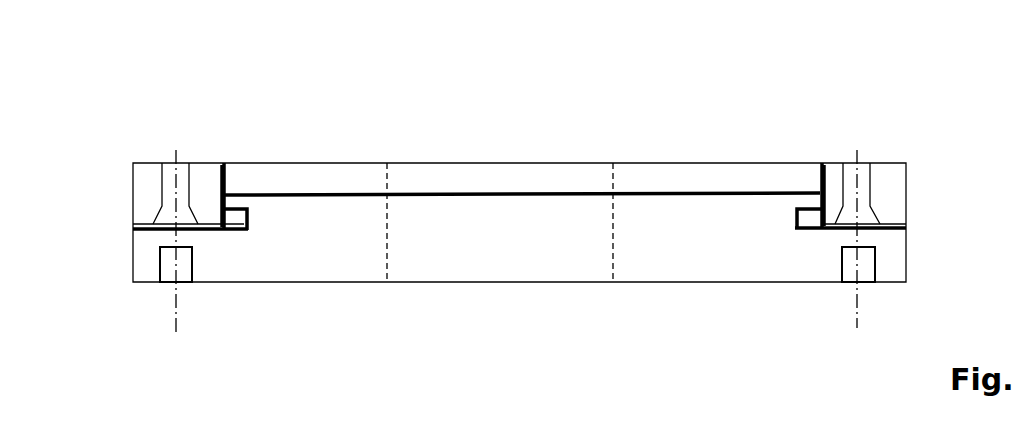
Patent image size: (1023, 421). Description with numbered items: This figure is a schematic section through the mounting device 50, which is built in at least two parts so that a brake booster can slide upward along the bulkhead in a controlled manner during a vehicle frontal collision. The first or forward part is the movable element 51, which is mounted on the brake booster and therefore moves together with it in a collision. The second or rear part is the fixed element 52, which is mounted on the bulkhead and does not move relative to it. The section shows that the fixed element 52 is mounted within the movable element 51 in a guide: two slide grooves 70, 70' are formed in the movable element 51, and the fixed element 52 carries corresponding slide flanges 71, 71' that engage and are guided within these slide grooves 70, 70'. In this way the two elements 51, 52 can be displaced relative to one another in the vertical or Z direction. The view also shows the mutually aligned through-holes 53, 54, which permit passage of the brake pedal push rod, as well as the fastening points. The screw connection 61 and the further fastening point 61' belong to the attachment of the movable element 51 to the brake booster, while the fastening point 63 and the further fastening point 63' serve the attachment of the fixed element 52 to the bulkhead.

The mounting device 50 is at (420, 113).
The movable element 51 is at (665, 173).
The fixed element 52 is at (733, 270).
The through-hole 53 is at (500, 178).
The through-hole 54 is at (493, 270).
The screw connection 61 is at (118, 241).
The fastening point 61' is at (915, 221).
The fastening point 63 is at (142, 318).
The fastening point 63' is at (888, 313).
The slide groove 70 is at (199, 156).
The slide groove 70' is at (857, 121).
The slide flange 71 is at (258, 157).
The slide flange 71' is at (797, 146).